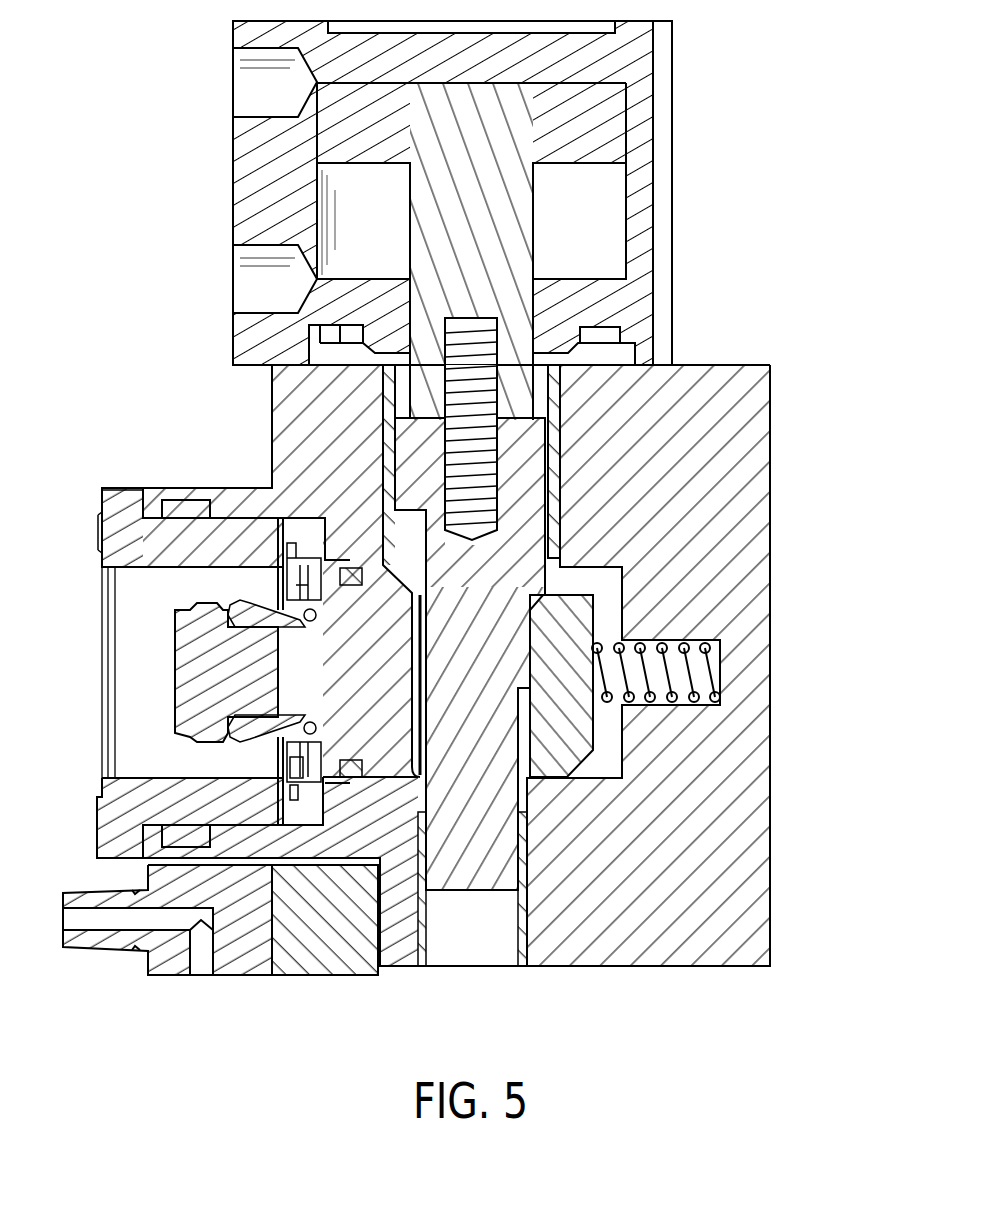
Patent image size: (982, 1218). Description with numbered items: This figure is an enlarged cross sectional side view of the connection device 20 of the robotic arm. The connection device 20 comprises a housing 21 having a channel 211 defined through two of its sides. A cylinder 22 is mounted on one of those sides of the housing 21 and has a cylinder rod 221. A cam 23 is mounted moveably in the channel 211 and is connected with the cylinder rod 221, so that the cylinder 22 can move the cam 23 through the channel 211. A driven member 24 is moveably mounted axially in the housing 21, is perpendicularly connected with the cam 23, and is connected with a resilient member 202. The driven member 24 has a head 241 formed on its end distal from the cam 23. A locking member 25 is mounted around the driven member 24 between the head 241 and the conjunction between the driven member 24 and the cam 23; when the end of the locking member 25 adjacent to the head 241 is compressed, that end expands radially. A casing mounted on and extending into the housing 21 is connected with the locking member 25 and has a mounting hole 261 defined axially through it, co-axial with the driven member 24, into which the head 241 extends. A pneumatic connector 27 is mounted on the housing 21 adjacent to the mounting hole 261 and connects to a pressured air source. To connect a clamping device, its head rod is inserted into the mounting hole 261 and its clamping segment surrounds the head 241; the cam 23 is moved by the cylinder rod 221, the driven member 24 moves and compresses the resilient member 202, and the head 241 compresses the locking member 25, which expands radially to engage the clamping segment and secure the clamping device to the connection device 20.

The connection device 20 is at (440, 535).
The housing 21 is at (621, 704).
The channel 211 is at (518, 942).
The cylinder 22 is at (444, 220).
The cylinder rod 221 is at (505, 227).
The cam 23 is at (453, 875).
The driven member 24 is at (168, 675).
The head 241 is at (227, 742).
The locking member 25 is at (255, 597).
The mounting hole 261 is at (147, 567).
The pneumatic connector 27 is at (290, 985).
The resilient member 202 is at (707, 648).